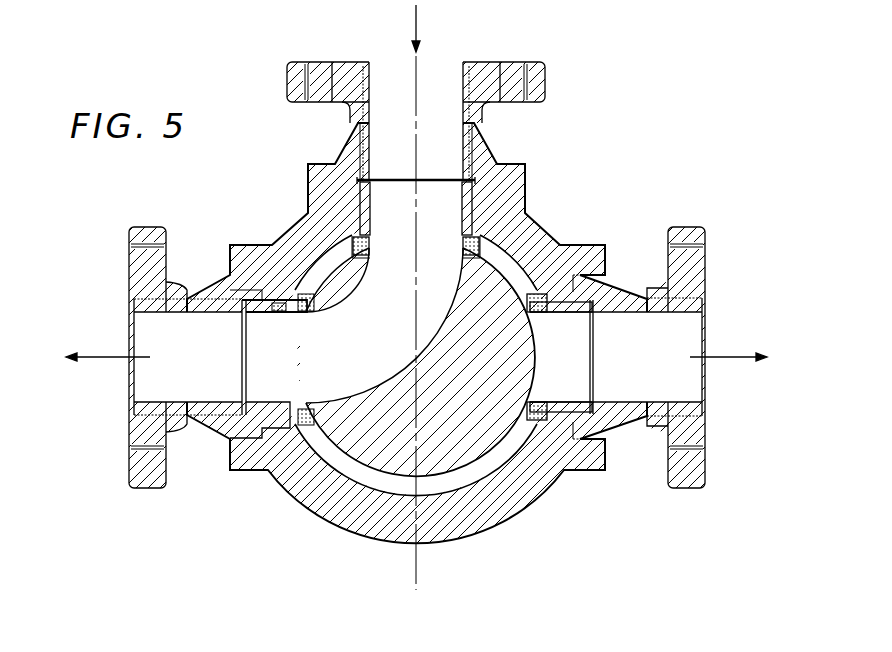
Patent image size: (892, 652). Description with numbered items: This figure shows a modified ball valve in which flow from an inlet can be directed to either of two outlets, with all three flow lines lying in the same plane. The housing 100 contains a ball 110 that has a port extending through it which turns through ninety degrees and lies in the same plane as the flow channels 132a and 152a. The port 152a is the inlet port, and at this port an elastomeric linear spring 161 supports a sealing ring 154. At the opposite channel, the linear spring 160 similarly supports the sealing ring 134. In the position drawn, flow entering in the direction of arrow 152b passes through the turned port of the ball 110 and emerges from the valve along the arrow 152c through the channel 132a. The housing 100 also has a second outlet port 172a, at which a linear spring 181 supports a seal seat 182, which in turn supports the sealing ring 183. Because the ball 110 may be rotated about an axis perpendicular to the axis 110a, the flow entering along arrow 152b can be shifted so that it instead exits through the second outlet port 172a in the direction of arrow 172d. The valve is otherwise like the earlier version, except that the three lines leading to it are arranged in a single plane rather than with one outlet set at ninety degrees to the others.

The housing 100 is at (530, 223).
The ball 110 is at (469, 375).
The axis 110a is at (418, 571).
The flow channel 132a is at (214, 370).
The sealing ring 134 is at (306, 406).
The inlet port 152a is at (442, 131).
The arrow 152b is at (419, 22).
The arrow 152c is at (100, 353).
The sealing ring 154 is at (362, 247).
The linear spring 160 is at (253, 313).
The elastomeric linear spring 161 is at (362, 214).
The second outlet port 172a is at (682, 390).
The arrow 172d is at (731, 355).
The linear spring 181 is at (577, 401).
The seal seat 182 is at (572, 351).
The sealing ring 183 is at (522, 418).